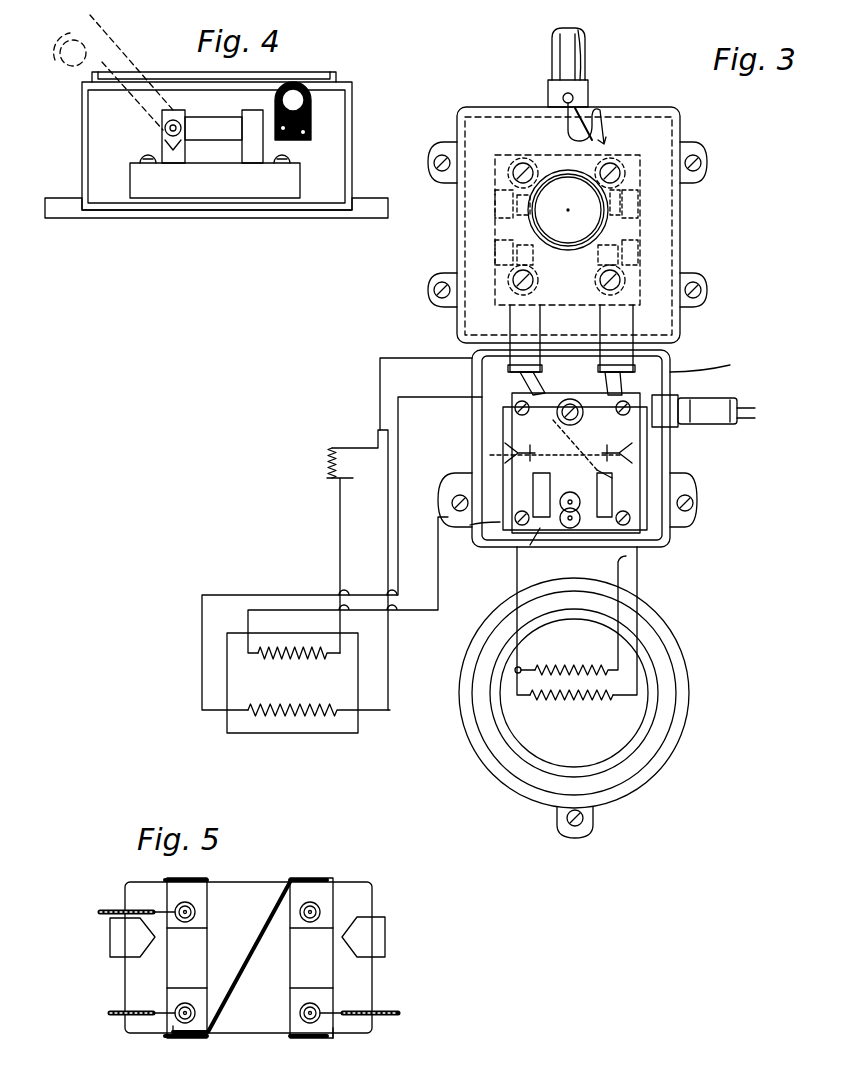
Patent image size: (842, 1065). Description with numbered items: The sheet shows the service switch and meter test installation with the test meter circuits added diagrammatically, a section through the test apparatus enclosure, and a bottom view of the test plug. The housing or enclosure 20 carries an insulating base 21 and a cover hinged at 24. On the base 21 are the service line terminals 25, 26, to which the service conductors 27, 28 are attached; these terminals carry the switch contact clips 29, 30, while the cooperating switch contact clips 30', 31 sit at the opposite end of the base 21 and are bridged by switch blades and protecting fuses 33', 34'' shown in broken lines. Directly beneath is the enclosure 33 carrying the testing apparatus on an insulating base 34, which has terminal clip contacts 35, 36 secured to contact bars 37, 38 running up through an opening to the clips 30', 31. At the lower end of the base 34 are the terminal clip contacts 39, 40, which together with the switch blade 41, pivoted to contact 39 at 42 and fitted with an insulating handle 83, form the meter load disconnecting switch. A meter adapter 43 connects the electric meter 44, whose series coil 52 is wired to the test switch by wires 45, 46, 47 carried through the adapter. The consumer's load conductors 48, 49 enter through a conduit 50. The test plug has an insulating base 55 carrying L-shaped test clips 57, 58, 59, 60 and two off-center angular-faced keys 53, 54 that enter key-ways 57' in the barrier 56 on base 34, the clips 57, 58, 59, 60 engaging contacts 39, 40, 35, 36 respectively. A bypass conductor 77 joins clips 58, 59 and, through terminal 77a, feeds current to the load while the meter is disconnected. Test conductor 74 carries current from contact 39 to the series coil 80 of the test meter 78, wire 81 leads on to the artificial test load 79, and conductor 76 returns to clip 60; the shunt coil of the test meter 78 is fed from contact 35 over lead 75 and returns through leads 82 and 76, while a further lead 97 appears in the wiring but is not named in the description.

In FIG. 3, the housing or enclosure 20 is at (680, 118).
In FIG. 3, the insulating base 21 is at (672, 140).
In FIG. 3, the hinge 24 is at (670, 356).
In FIG. 3, the service line terminal 25 is at (520, 160).
In FIG. 3, the service line terminal 26 is at (636, 167).
In FIG. 3, the service conductor 27 is at (552, 25).
In FIG. 3, the service conductor 28 is at (576, 25).
In FIG. 3, the switch contact clip 29 is at (497, 205).
In FIG. 3, the switch contact clip 30 is at (626, 210).
In FIG. 3, the cooperating switch contact clip 30' is at (462, 256).
In FIG. 3, the cooperating switch contact clip 31 is at (640, 258).
In FIG. 3, the enclosure 33 is at (711, 360).
In FIG. 3, the protecting fuse 33' is at (466, 224).
In FIG. 4, the insulating base 34 is at (215, 180).
In FIG. 3, the insulating base 34 is at (586, 463).
In FIG. 3, the protecting fuse 34'' is at (675, 214).
In FIG. 3, the terminal clip contact 35 is at (530, 385).
In FIG. 3, the terminal clip contact 36 is at (645, 400).
In FIG. 3, the contact bar 37 is at (510, 320).
In FIG. 3, the contact bar 38 is at (633, 320).
In FIG. 4, the terminal clip contact 39 is at (140, 153).
In FIG. 3, the terminal clip contact 39 is at (576, 463).
In FIG. 4, the terminal clip contact 40 is at (290, 153).
In FIG. 3, the terminal clip contact 40 is at (612, 490).
In FIG. 4, the switch blade 41 is at (217, 126).
In FIG. 3, the switch blade 41 is at (482, 532).
In FIG. 4, the pivot 42 is at (162, 128).
In FIG. 3, the pivot 42 is at (540, 528).
In FIG. 3, the meter adapter 43 is at (638, 580).
In FIG. 3, the electric meter 44 is at (612, 783).
In FIG. 3, the wire 45 is at (515, 588).
In FIG. 3, the wire 46 is at (640, 627).
In FIG. 3, the wire 47 is at (618, 603).
In FIG. 3, the load conductor 48 is at (755, 408).
In FIG. 3, the load conductor 49 is at (755, 418).
In FIG. 3, the conduit 50 is at (730, 395).
In FIG. 3, the series coil 52 is at (613, 700).
In FIG. 5, the key 53 is at (110, 937).
In FIG. 5, the key 54 is at (385, 937).
In FIG. 5, the test plug base 55 is at (242, 1030).
In FIG. 3, the barrier 56 is at (568, 398).
In FIG. 5, the test clip 57 is at (186, 944).
In FIG. 3, the key-way 57' is at (582, 446).
In FIG. 5, the test clip 58 is at (302, 880).
In FIG. 5, the test clip 59 is at (180, 1040).
In FIG. 5, the test clip 60 is at (322, 1040).
In FIG. 3, the test conductor 74 is at (440, 608).
In FIG. 5, the test conductor 74 is at (112, 912).
In FIG. 3, the test conductor 75 is at (398, 397).
In FIG. 5, the test conductor 75 is at (120, 1013).
In FIG. 3, the test conductor 76 is at (380, 358).
In FIG. 5, the test conductor 76 is at (380, 1010).
In FIG. 3, the bypass conductor 77 is at (490, 455).
In FIG. 5, the bypass conductor 77 is at (268, 918).
In FIG. 3, the terminal 77a is at (615, 482).
In FIG. 3, the test meter 78 is at (340, 734).
In FIG. 3, the artificial load 79 is at (327, 458).
In FIG. 3, the series coil 80 is at (270, 658).
In FIG. 3, the wire 81 is at (340, 530).
In FIG. 3, the lead 82 is at (388, 650).
In FIG. 4, the handle 83 is at (305, 88).
In FIG. 3, the wire 97 is at (455, 500).